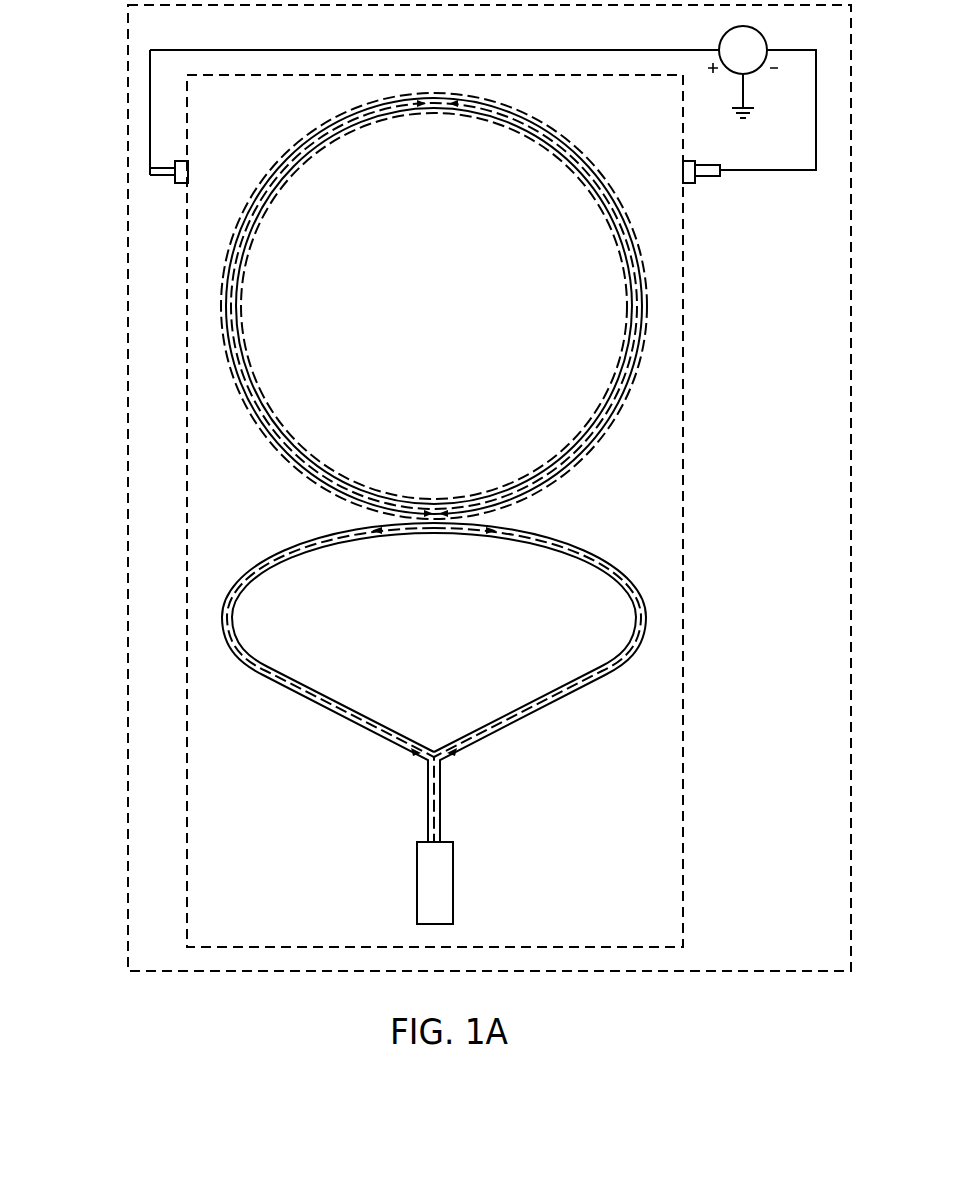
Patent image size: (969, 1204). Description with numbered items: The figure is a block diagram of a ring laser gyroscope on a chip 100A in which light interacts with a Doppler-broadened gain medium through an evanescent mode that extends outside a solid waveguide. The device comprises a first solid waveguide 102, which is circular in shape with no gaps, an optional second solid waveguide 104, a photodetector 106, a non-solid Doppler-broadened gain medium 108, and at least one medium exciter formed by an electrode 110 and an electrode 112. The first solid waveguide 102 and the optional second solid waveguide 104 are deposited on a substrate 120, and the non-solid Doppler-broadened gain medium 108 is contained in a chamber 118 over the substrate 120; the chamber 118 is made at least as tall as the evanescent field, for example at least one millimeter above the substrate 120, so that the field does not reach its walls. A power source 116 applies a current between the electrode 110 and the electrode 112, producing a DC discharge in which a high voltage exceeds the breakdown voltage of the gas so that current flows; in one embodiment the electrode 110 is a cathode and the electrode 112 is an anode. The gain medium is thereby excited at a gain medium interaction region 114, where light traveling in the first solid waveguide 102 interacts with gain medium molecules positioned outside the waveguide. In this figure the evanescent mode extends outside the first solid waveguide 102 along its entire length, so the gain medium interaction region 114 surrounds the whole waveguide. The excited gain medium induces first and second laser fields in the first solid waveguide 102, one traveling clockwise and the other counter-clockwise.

The ring laser gyroscope on a chip 100A is at (100, 196).
The first solid waveguide 102 is at (276, 167).
The second solid waveguide 104 is at (280, 558).
The photodetector 106 is at (417, 880).
The non-solid Doppler-broadened gain medium 108 is at (604, 122).
The electrode 110 is at (700, 181).
The electrode 112 is at (172, 180).
The gain medium interaction region 114 is at (320, 127).
The power source 116 is at (752, 63).
The chamber 118 is at (683, 530).
The substrate 120 is at (128, 372).